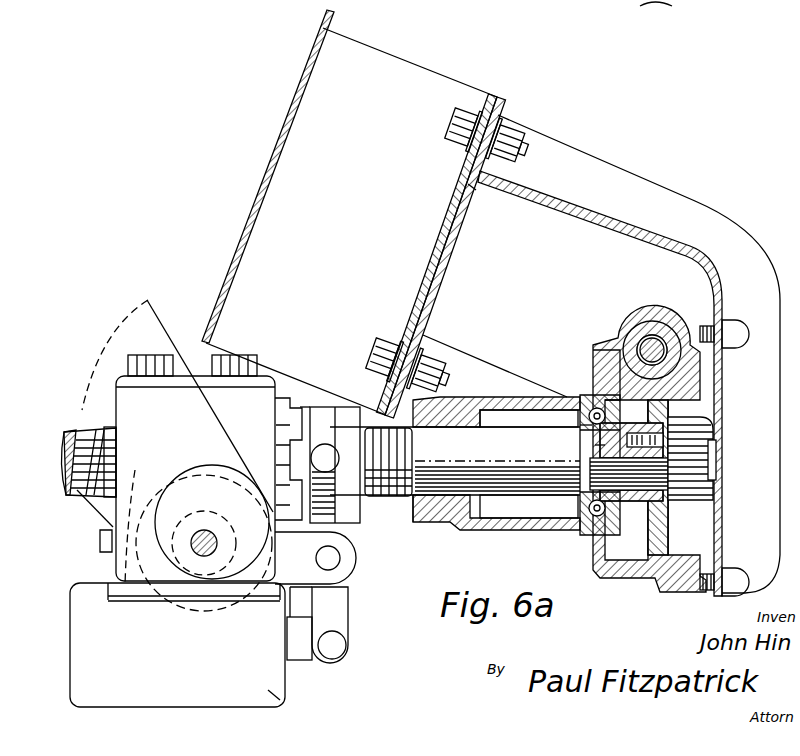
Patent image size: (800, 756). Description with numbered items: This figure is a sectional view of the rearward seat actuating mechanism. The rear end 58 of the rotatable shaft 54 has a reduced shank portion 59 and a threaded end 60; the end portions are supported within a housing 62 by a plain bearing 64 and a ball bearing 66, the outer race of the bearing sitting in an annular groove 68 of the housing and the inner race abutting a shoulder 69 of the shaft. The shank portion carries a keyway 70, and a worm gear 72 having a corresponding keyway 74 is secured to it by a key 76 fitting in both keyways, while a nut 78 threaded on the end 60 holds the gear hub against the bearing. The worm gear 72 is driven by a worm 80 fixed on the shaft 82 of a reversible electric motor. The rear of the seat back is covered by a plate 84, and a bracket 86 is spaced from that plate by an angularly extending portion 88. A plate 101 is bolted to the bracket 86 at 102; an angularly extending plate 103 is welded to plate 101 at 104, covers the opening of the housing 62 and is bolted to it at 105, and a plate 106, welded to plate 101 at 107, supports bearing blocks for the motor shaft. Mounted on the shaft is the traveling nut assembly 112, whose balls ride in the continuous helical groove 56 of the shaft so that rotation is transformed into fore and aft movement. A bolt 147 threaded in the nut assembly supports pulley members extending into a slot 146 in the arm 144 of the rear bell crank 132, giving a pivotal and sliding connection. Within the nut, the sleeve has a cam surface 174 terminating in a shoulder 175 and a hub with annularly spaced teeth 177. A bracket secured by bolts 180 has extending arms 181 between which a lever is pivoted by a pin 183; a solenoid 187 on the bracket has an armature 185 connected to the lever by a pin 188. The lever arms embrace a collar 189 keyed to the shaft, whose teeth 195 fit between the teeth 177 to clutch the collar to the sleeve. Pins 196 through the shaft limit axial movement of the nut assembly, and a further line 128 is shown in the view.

The shaft 54 is at (404, 443).
The continuous helical groove 56 is at (388, 496).
The rear end 58 is at (478, 425).
The reduced shank portion 59 is at (655, 501).
The threaded end 60 is at (716, 470).
The housing 62 is at (515, 532).
The plain bearing 64 is at (428, 520).
The ball bearing 66 is at (596, 536).
The annular groove 68 is at (604, 542).
The shoulder 69 is at (580, 425).
The keyway 70 is at (600, 445).
The worm gear 72 is at (660, 520).
The keyway 74 is at (620, 402).
The key 76 is at (650, 438).
The nut 78 is at (704, 432).
The worm 80 is at (660, 320).
The motor shaft 82 is at (648, 344).
The plate 84 is at (298, 90).
The bracket 86 is at (501, 97).
The angularly extending portion 88 is at (404, 63).
The plate 101 is at (497, 104).
The bolt 102 is at (447, 131).
The angularly extending plate 103 is at (620, 222).
The weld 104 is at (472, 190).
The bolt 105 is at (740, 338).
The plate 106 is at (683, 190).
The weld 107 is at (512, 124).
The traveling nut assembly 112 is at (213, 706).
The hidden line 128 is at (143, 517).
The rear bell crank 132 is at (150, 298).
The arm 144 is at (178, 458).
The slot 146 is at (198, 468).
The bolt 147 is at (218, 543).
The cam surface 174 is at (116, 447).
The shoulder 175 is at (82, 440).
The teeth 177 is at (280, 416).
The bolt 180 is at (100, 540).
The extending arm 181 is at (302, 582).
The pin 183 is at (334, 556).
The solenoid armature 185 is at (300, 655).
The solenoid 187 is at (280, 700).
The pin 188 is at (334, 645).
The collar 189 is at (345, 408).
The teeth 195 is at (300, 410).
The pin 196 is at (358, 458).